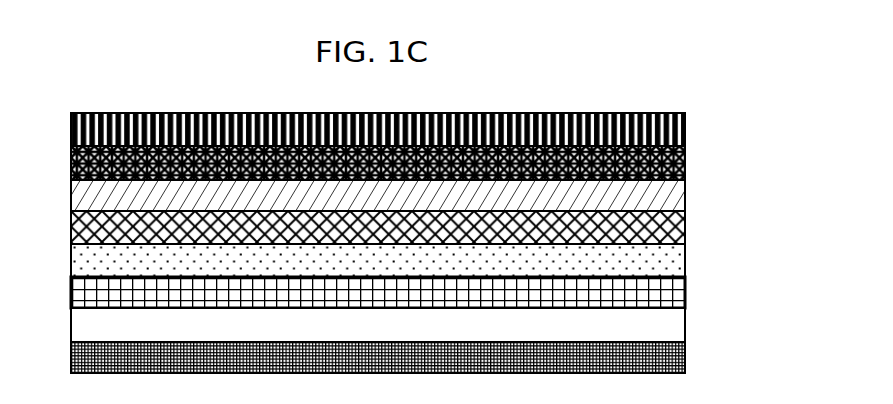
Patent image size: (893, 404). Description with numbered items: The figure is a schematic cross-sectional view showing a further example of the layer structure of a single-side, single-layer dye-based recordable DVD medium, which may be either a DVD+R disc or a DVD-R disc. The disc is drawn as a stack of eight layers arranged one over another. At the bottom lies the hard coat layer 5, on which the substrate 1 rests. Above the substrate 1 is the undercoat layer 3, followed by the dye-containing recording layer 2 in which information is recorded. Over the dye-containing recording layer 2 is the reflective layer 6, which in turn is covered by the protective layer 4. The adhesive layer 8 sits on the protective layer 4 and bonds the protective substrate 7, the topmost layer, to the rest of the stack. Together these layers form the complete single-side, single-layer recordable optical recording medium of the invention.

The substrate 1 is at (687, 318).
The dye-containing recording layer 2 is at (687, 254).
The undercoat layer 3 is at (687, 286).
The protective layer 4 is at (687, 187).
The hard coat layer 5 is at (687, 348).
The reflective layer 6 is at (687, 218).
The protective substrate 7 is at (687, 122).
The adhesive layer 8 is at (687, 155).